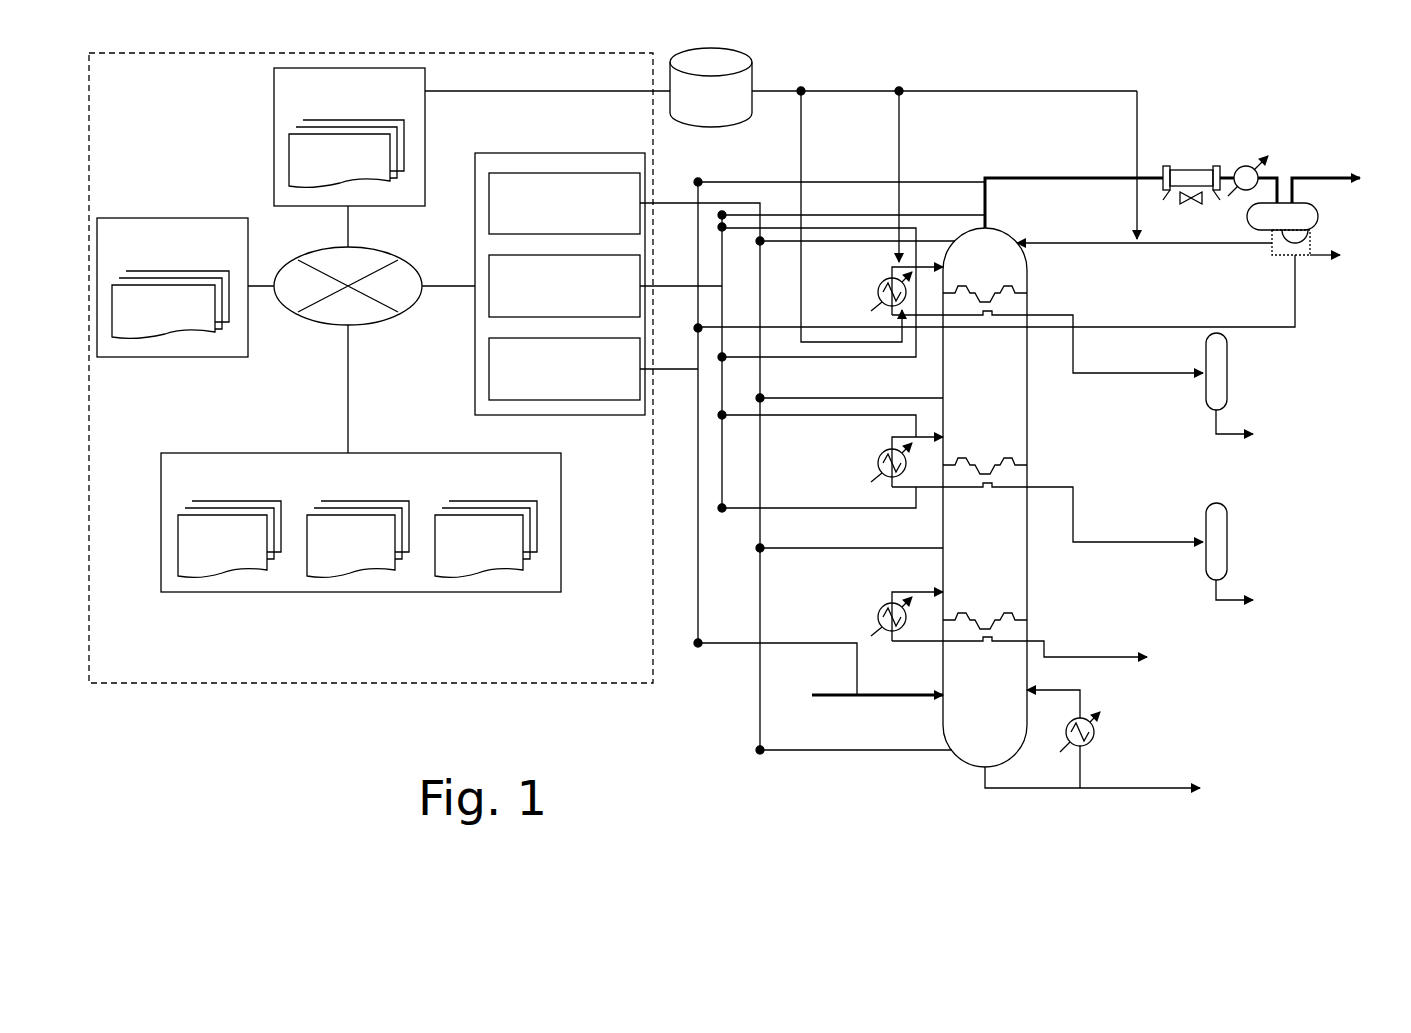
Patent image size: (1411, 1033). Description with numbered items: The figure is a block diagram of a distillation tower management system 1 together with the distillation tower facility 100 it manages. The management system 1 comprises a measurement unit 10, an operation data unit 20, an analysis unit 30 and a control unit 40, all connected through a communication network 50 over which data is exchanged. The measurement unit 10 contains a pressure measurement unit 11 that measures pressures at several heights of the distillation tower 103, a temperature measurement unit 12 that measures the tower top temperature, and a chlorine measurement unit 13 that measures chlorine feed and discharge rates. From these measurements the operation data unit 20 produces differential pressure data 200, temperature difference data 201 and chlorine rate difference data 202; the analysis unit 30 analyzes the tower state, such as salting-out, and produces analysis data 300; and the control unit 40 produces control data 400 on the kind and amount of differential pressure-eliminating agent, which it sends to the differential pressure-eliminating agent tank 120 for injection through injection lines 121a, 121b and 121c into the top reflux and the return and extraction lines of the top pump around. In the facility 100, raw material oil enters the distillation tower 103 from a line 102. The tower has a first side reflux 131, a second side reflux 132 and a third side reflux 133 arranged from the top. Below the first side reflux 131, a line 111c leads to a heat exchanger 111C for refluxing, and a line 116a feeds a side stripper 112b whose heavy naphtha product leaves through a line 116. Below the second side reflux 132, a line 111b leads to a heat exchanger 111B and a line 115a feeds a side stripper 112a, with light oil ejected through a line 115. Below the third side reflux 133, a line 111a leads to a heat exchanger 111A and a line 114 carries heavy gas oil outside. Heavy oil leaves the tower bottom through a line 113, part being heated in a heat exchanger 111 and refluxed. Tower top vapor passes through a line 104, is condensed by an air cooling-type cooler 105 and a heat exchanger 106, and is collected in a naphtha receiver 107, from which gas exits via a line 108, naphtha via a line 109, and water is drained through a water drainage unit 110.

The distillation tower management system 1 is at (89, 170).
The measurement unit 10 is at (597, 415).
The pressure measurement unit 11 is at (489, 190).
The temperature measurement unit 12 is at (489, 300).
The chlorine measurement unit 13 is at (489, 384).
The operation data unit 20 is at (528, 592).
The differential pressure data 200 is at (192, 578).
The temperature difference data 201 is at (313, 578).
The chlorine rate difference data 202 is at (450, 578).
The analysis unit 30 is at (212, 357).
The analysis data 300 is at (130, 338).
The control unit 40 is at (274, 98).
The control data 400 is at (289, 171).
The communication network 50 is at (320, 325).
The distillation tower facility 100 is at (1360, 138).
The line 102 is at (827, 699).
The distillation tower 103 is at (1030, 422).
The line 104 is at (1040, 178).
The air cooling-type cooler 105 is at (1192, 168).
The heat exchanger 106 is at (1244, 162).
The naphtha receiver 107 is at (1320, 216).
The line 108 is at (1324, 178).
The line 109 is at (1318, 256).
The water drainage unit 110 is at (1310, 246).
The heat exchanger 111 is at (1098, 733).
The heat exchanger 111A is at (868, 611).
The heat exchanger 111B is at (868, 454).
The heat exchanger 111C is at (878, 282).
The line 111a is at (922, 642).
The line 111b is at (928, 490).
The line 111c is at (928, 320).
The side stripper 112a is at (1227, 530).
The side stripper 112b is at (1227, 360).
The line 113 is at (1186, 784).
The line 114 is at (1100, 660).
The line 115 is at (1232, 600).
The line 115a is at (1125, 542).
The line 116 is at (1232, 434).
The line 116a is at (1125, 373).
The differential pressure-eliminating agent tank 120 is at (752, 72).
The differential pressure-eliminating agent injection line 121a is at (1136, 221).
The differential pressure-eliminating agent injection line 121b is at (901, 148).
The differential pressure-eliminating agent injection line 121c is at (803, 160).
The first side reflux 131 is at (1027, 292).
The second side reflux 132 is at (1027, 462).
The third side reflux 133 is at (1027, 612).